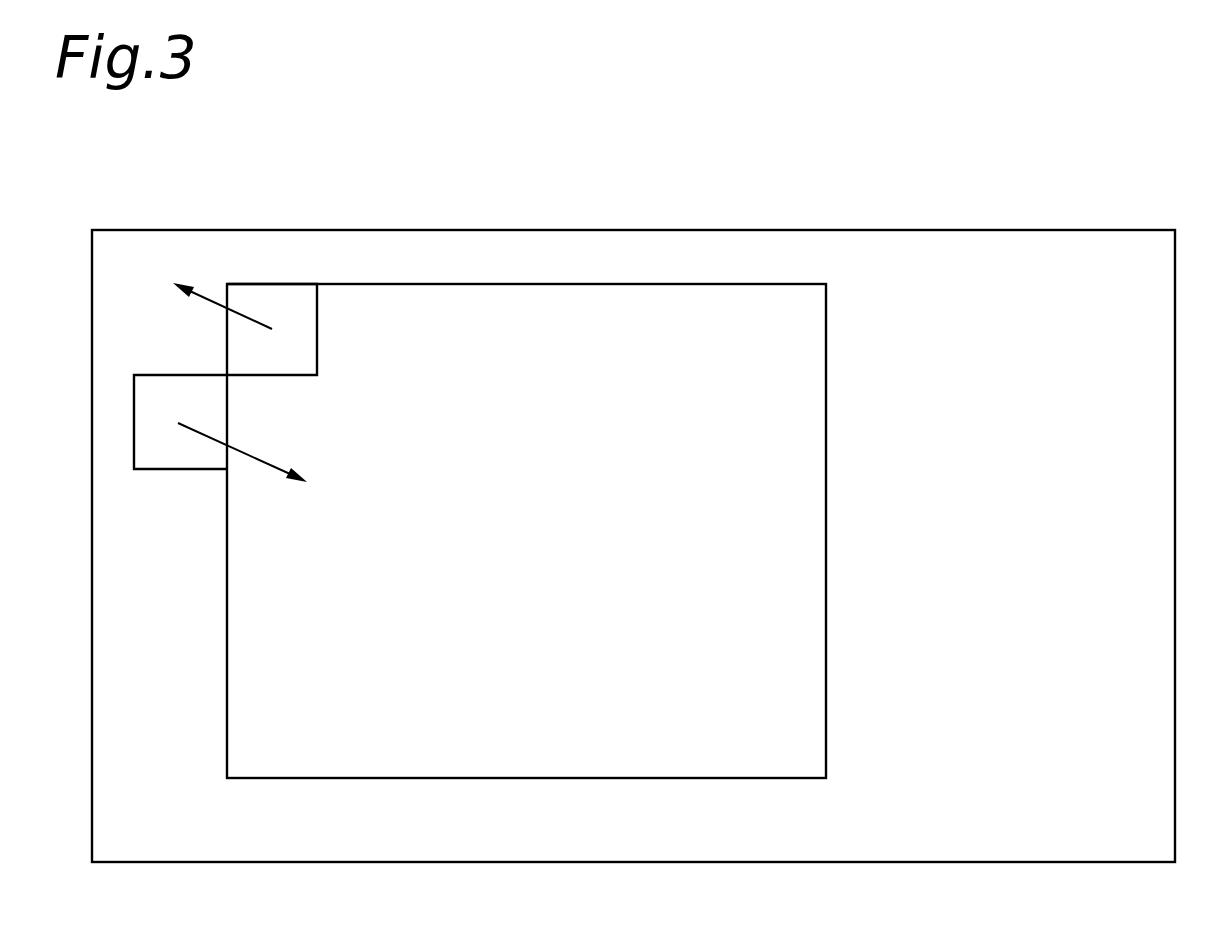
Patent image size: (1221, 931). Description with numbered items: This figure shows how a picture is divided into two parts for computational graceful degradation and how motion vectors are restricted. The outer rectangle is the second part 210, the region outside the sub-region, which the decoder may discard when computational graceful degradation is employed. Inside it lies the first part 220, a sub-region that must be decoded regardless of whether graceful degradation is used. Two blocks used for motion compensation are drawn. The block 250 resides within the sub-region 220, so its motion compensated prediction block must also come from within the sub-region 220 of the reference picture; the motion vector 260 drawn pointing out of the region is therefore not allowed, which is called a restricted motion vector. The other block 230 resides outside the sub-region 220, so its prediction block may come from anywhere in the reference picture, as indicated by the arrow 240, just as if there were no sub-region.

The second part 210 is at (867, 229).
The first part 220 is at (827, 537).
The block 230 is at (180, 470).
The drag direction arrow 240 is at (267, 461).
The block 250 is at (318, 326).
The motion vector 260 is at (200, 293).